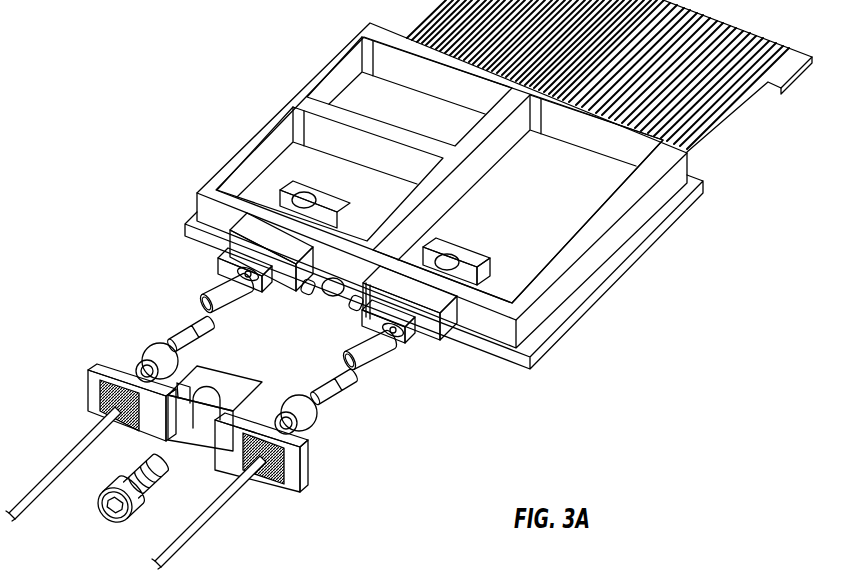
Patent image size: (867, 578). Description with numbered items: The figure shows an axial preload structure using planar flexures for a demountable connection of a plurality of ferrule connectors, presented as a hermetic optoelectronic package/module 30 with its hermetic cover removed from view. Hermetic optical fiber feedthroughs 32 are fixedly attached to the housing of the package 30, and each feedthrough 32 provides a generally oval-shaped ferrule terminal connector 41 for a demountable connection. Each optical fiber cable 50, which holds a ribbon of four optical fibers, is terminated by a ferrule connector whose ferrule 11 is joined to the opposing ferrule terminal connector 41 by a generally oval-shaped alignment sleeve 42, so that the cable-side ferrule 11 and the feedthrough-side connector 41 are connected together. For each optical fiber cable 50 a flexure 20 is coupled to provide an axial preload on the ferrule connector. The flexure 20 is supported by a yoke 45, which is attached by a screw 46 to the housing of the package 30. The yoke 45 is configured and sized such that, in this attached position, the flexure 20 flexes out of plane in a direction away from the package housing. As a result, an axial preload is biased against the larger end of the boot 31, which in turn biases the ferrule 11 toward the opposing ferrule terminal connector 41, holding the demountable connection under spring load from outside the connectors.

The ferrule 11 is at (186, 334).
The flexure 20 is at (128, 416).
The hermetic optoelectronic package/module 30 is at (630, 262).
The boot 31 is at (153, 353).
The hermetic optical fiber feedthrough 32 is at (249, 231).
The ferrule terminal connector 41 is at (248, 275).
The alignment sleeve 42 is at (228, 300).
The yoke 45 is at (211, 428).
The screw 46 is at (108, 505).
The optical fiber cable 50 is at (78, 448).